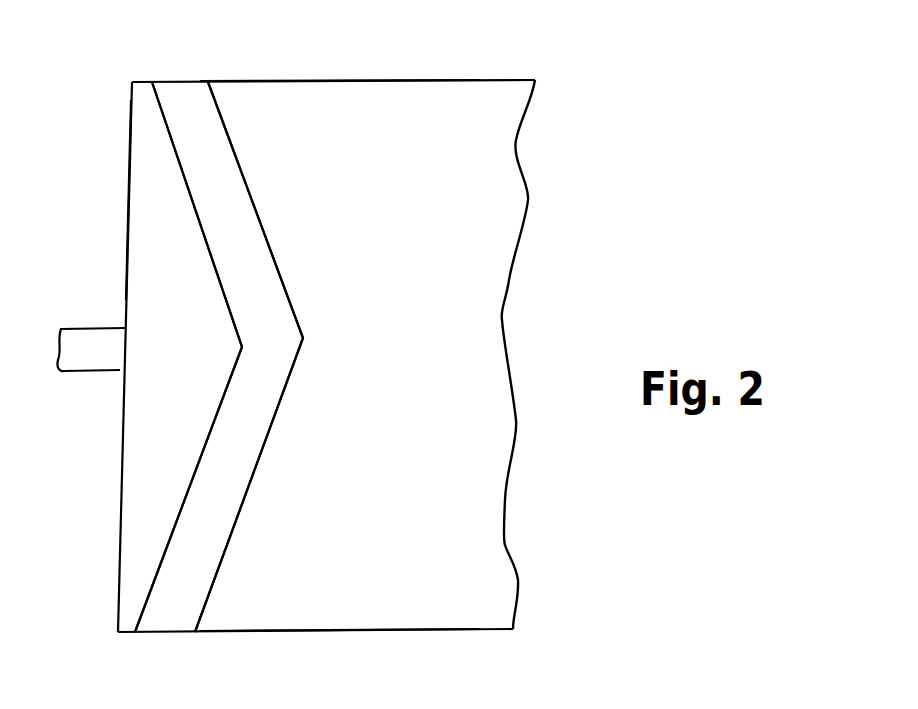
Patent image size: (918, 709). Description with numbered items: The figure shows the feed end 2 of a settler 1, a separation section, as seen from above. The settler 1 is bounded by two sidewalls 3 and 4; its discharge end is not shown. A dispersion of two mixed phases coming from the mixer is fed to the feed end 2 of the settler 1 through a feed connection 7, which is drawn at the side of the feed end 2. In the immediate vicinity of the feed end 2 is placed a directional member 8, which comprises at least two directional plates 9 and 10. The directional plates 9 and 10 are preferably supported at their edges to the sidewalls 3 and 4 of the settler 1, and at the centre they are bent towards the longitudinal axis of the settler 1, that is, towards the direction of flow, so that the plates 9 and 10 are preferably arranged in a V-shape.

The settler 1 is at (543, 36).
The feed end 2 is at (127, 240).
The sidewall 3 is at (343, 80).
The sidewall 4 is at (320, 629).
The feed connection 7 is at (79, 360).
The directional member 8 is at (160, 69).
The directional plate 9 is at (180, 169).
The directional plate 10 is at (228, 123).